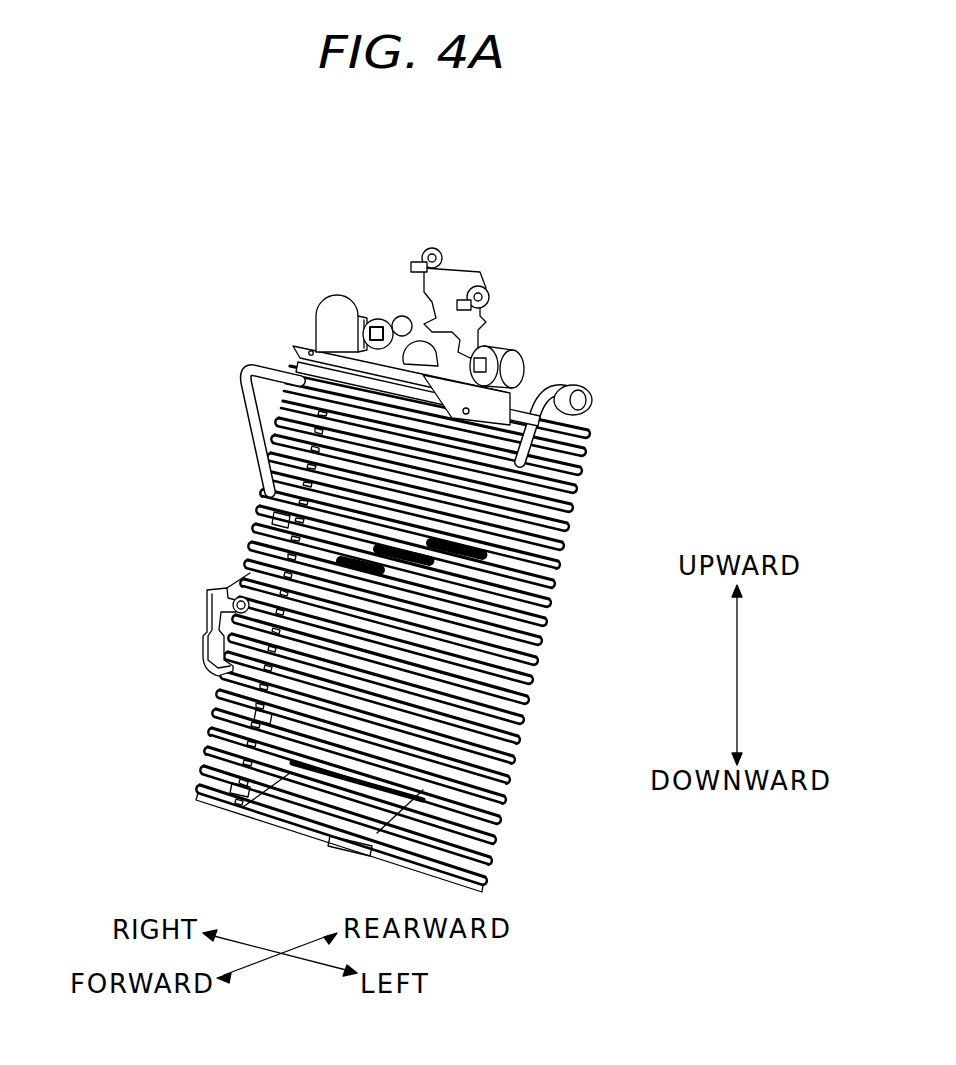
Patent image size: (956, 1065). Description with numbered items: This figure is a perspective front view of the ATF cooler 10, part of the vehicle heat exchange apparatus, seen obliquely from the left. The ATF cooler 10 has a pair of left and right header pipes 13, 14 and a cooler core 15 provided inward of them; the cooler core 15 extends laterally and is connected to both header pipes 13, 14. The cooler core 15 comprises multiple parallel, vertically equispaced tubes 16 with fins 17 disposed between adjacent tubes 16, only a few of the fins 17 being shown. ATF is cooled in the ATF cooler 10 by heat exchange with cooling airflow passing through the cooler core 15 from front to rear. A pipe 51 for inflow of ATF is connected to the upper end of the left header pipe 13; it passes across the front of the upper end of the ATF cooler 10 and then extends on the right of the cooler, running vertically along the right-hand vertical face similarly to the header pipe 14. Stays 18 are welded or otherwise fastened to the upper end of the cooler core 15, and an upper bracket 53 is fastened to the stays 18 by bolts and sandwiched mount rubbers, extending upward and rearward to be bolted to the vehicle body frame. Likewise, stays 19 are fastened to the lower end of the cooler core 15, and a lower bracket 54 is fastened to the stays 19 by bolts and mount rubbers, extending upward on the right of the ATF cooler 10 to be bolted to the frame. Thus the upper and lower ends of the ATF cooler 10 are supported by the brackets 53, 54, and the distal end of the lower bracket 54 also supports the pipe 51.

The ATF cooler 10 is at (503, 807).
The header pipe 13 is at (592, 470).
The header pipe 14 is at (285, 520).
The cooler core 15 is at (331, 744).
The tubes 16 is at (262, 720).
The fins 17 is at (433, 567).
The stays 18 is at (417, 347).
The stays 19 is at (392, 853).
The pipe 51 is at (258, 364).
The upper bracket 53 is at (500, 318).
The lower bracket 54 is at (215, 660).